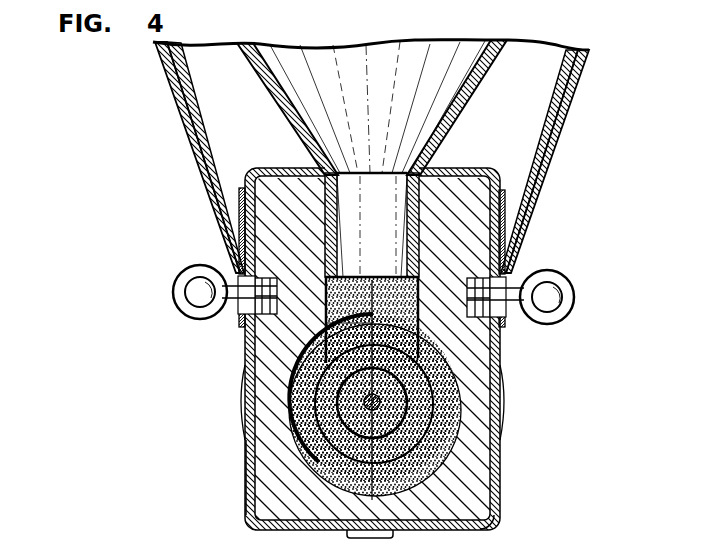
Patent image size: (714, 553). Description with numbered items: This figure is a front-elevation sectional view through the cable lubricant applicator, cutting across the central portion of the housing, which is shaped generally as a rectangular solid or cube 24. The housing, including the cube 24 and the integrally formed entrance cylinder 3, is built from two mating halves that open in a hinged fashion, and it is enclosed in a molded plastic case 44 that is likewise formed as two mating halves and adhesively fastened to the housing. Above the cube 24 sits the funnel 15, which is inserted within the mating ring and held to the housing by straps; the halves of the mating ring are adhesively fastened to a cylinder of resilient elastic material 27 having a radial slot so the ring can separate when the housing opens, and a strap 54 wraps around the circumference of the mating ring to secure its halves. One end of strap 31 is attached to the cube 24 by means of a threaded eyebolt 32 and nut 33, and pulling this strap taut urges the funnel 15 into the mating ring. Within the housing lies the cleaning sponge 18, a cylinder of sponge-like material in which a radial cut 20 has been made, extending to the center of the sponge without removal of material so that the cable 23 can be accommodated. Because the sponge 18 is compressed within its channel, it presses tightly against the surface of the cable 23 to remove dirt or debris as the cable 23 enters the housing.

The entrance cylinder 3 is at (503, 387).
The funnel 15 is at (456, 121).
The cleaning sponge 18 is at (381, 404).
The radial cut 20 is at (372, 323).
The cable 23 is at (350, 414).
The cube 24 is at (498, 511).
The resilient elastic material 27 is at (475, 224).
The strap 31 is at (198, 162).
The threaded eyebolt 32 is at (181, 273).
The nut 33 is at (247, 333).
The molded plastic case 44 is at (248, 483).
The strap 54 is at (505, 240).